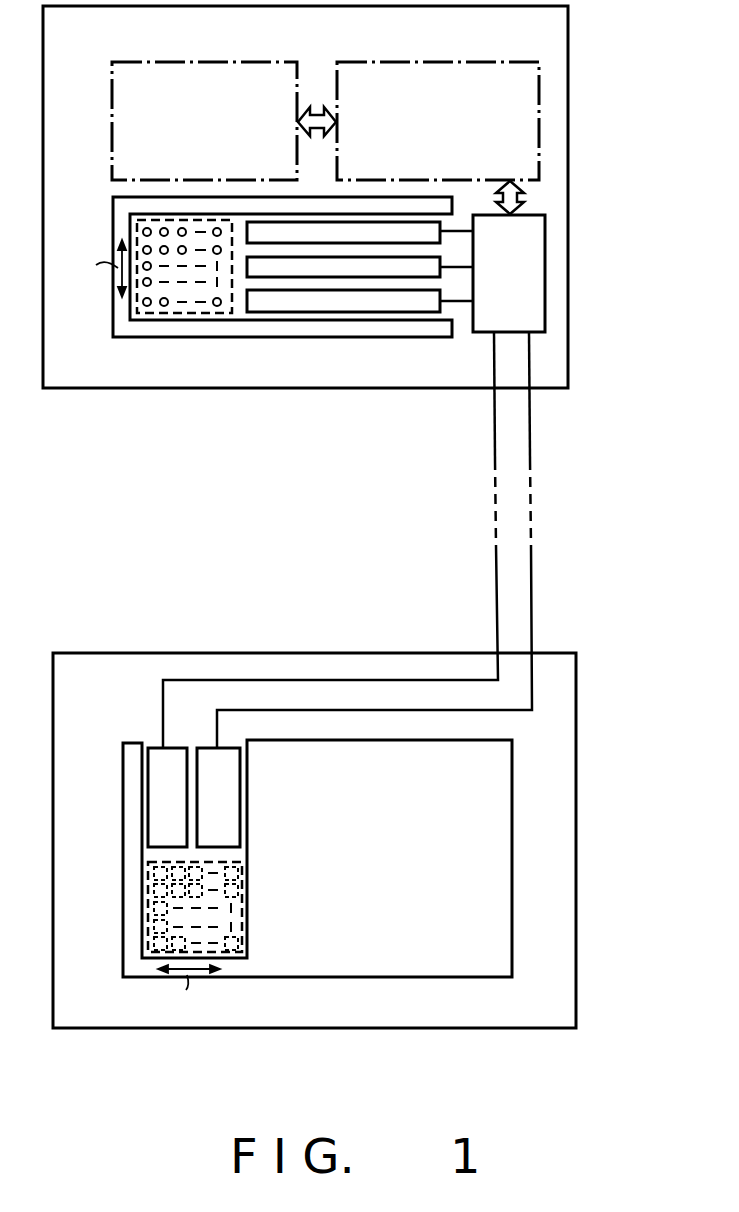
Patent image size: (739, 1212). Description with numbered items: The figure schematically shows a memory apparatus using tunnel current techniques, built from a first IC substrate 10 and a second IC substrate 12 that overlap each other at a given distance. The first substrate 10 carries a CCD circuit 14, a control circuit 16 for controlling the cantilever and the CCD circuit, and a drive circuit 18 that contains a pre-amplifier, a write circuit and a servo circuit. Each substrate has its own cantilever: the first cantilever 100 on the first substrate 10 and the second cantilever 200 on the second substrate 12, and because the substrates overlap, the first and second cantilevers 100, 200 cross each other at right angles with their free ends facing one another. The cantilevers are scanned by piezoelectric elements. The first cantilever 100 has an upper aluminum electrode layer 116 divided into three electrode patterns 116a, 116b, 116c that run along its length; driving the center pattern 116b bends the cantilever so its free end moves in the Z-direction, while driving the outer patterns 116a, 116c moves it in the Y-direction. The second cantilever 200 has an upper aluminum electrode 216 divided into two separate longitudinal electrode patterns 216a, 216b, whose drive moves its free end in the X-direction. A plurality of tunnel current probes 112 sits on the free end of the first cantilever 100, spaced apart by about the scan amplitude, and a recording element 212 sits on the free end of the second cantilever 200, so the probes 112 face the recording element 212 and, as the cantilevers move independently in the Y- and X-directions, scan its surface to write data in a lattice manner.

The first IC substrate 10 is at (568, 372).
The second IC substrate 12 is at (577, 1005).
The CCD circuit 14 is at (110, 94).
The control circuit 16 is at (470, 62).
The drive circuit 18 is at (545, 305).
The first cantilever 100 is at (250, 282).
The tunnel current probes 112 is at (150, 303).
The upper aluminum electrode layer 116 is at (352, 350).
The electrode pattern 116a is at (268, 235).
The electrode pattern 116b is at (343, 268).
The electrode pattern 116c is at (232, 432).
The second cantilever 200 is at (287, 861).
The recording element 212 is at (243, 930).
The upper aluminum electrode 216 is at (200, 776).
The electrode pattern 216a is at (190, 815).
The electrode pattern 216b is at (157, 750).